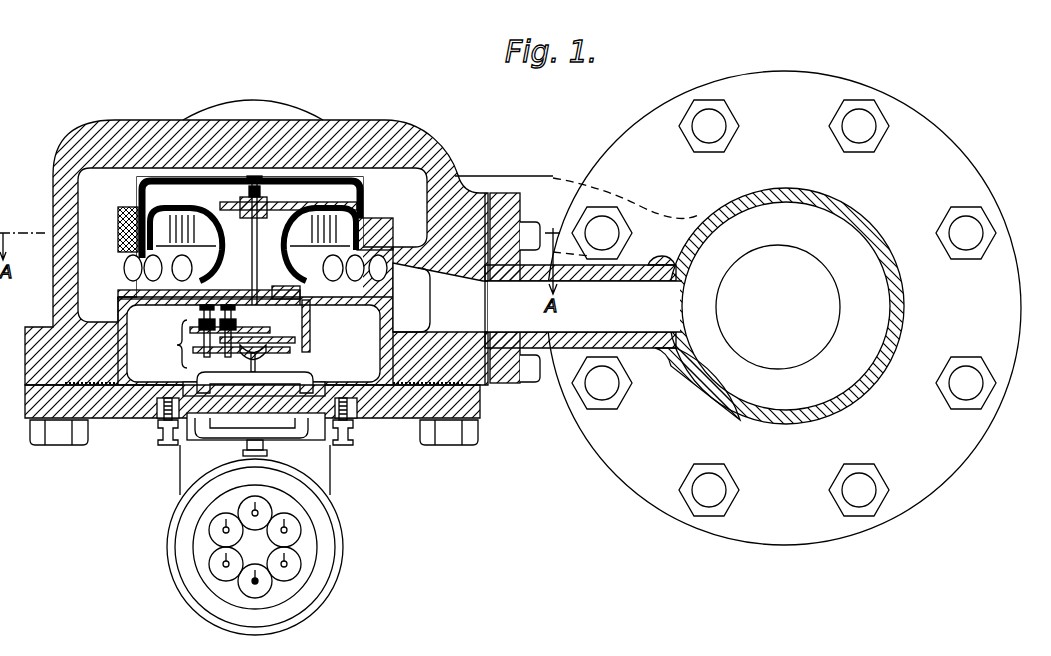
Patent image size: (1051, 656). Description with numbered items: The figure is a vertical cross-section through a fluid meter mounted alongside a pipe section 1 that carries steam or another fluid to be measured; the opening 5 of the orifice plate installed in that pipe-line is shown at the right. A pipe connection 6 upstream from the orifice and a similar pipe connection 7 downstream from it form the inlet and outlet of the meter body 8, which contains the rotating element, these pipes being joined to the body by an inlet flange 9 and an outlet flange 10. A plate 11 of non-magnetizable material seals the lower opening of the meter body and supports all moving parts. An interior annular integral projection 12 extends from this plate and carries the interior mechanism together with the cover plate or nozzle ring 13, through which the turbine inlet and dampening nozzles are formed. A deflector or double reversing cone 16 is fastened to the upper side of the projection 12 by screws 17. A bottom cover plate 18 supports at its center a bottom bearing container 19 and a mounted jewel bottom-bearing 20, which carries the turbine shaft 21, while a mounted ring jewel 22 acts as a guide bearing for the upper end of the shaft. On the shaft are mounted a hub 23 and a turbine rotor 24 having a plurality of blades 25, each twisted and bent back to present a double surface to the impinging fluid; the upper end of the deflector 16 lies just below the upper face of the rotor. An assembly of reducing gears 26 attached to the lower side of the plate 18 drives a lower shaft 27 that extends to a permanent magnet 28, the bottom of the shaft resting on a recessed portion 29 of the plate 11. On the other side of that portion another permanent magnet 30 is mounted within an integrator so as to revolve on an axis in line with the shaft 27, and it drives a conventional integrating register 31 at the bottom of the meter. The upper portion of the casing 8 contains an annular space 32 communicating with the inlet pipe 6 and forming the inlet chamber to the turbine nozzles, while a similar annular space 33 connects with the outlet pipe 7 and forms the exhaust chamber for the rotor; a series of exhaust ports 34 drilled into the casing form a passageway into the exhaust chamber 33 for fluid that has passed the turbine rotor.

The pipe section 1 is at (810, 196).
The orifice plate opening 5 is at (838, 302).
The pipe connection 6 is at (546, 178).
The pipe connection 7 is at (645, 263).
The meter body 8 is at (437, 150).
The inlet flange 9 is at (279, 103).
The outlet flange 10 is at (505, 193).
The plate 11 is at (135, 422).
The annular integral projection 12 is at (128, 342).
The nozzle ring 13 is at (145, 183).
The deflector 16 is at (210, 240).
The screws 17 is at (118, 293).
The bottom cover plate 18 is at (331, 306).
The bottom bearing container 19 is at (285, 292).
The jewel bottom-bearing 20 is at (264, 313).
The turbine shaft 21 is at (258, 243).
The ring jewel 22 is at (253, 180).
The hub 23 is at (267, 203).
The turbine rotor 24 is at (301, 203).
The blades 25 is at (353, 215).
The reducing gears 26 is at (226, 337).
The lower shaft 27 is at (262, 361).
The permanent magnet 28 is at (306, 376).
The recessed portion 29 is at (335, 448).
The permanent magnet 30 is at (178, 448).
The integrating register 31 is at (168, 527).
The annular space 32 is at (85, 192).
The annular space 33 is at (430, 305).
The exhaust ports 34 is at (385, 274).